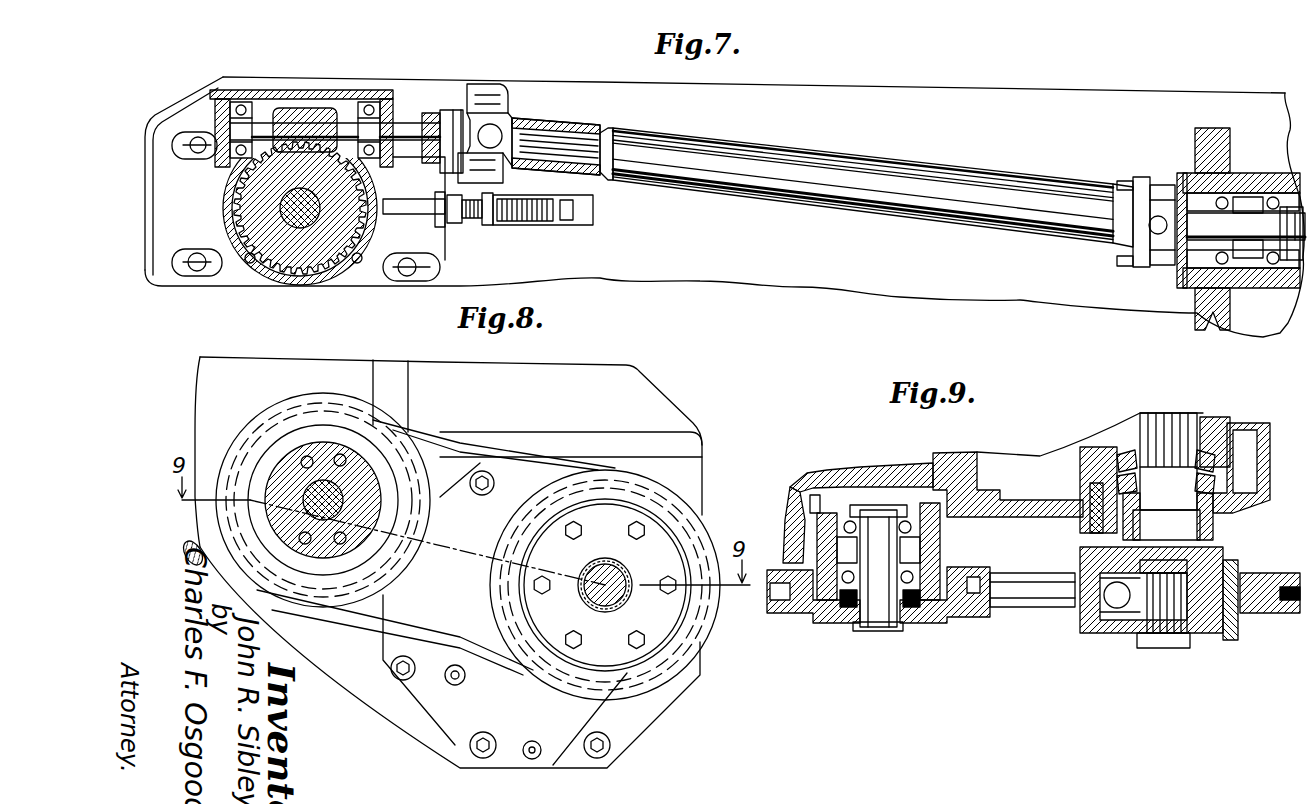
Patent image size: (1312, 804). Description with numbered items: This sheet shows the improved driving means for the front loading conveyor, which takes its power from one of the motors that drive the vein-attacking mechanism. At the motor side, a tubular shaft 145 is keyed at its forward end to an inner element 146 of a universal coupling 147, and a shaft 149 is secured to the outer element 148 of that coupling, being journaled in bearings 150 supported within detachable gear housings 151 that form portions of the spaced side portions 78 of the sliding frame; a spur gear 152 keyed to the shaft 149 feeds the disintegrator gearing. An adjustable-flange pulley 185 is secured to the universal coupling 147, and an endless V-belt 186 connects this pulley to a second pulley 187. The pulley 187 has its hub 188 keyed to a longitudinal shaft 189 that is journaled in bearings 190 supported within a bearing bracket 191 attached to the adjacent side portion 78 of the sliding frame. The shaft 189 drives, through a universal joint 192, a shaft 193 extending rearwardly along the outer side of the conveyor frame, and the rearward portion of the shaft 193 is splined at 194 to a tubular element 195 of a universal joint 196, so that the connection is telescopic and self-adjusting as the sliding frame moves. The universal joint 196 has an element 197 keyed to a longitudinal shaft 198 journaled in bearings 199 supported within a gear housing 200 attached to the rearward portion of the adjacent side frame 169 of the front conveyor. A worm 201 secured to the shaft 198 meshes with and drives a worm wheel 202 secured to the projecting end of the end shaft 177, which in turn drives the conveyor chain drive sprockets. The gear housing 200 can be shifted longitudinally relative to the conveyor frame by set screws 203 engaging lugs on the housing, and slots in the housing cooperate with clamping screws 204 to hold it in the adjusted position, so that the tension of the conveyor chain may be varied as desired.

In FIG. 8, the side portions 78 is at (240, 347).
In FIG. 9, the side portions 78 is at (795, 498).
In FIG. 8, the tubular shaft 145 is at (622, 609).
In FIG. 9, the tubular shaft 145 is at (1163, 650).
In FIG. 9, the inner element 146 is at (1220, 640).
In FIG. 9, the universal coupling 147 is at (1115, 610).
In FIG. 9, the outer element 148 is at (1087, 560).
In FIG. 9, the shaft 149 is at (1097, 497).
In FIG. 9, the bearings 150 is at (1247, 517).
In FIG. 8, the gear housings 151 is at (653, 724).
In FIG. 9, the gear housings 151 is at (1270, 435).
In FIG. 9, the spur gear 152 is at (1222, 432).
In FIG. 7, the side frames 169 is at (781, 93).
In FIG. 7, the end shafts 177 is at (320, 210).
In FIG. 8, the adjustable-flange pulley 185 is at (707, 527).
In FIG. 9, the adjustable-flange pulley 185 is at (1266, 585).
In FIG. 7, the V-belt 186 is at (1213, 137).
In FIG. 8, the V-belt 186 is at (472, 445).
In FIG. 9, the V-belt 186 is at (1023, 595).
In FIG. 7, the pulley 187 is at (1222, 322).
In FIG. 8, the pulley 187 is at (309, 402).
In FIG. 9, the pulley 187 is at (820, 624).
In FIG. 7, the hub 188 is at (1193, 260).
In FIG. 9, the hub 188 is at (910, 612).
In FIG. 7, the longitudinal shaft 189 is at (1257, 240).
In FIG. 8, the longitudinal shaft 189 is at (330, 500).
In FIG. 9, the longitudinal shaft 189 is at (880, 550).
In FIG. 7, the bearings 190 is at (1273, 197).
In FIG. 9, the bearings 190 is at (842, 577).
In FIG. 7, the bearing bracket 191 is at (1207, 287).
In FIG. 9, the bearing bracket 191 is at (939, 560).
In FIG. 7, the universal joint 192 is at (1150, 223).
In FIG. 7, the shaft 193 is at (858, 170).
In FIG. 7, the splined portion 194 is at (607, 134).
In FIG. 7, the tubular element 195 is at (563, 123).
In FIG. 7, the universal joint 196 is at (513, 127).
In FIG. 7, the element 197 is at (448, 112).
In FIG. 7, the longitudinal shaft 198 is at (428, 115).
In FIG. 7, the bearings 199 is at (241, 105).
In FIG. 7, the gear housing 200 is at (330, 90).
In FIG. 7, the worm 201 is at (303, 108).
In FIG. 7, the worm wheel 202 is at (298, 268).
In FIG. 7, the set screws 203 is at (477, 227).
In FIG. 7, the clamping screws 204 is at (197, 253).